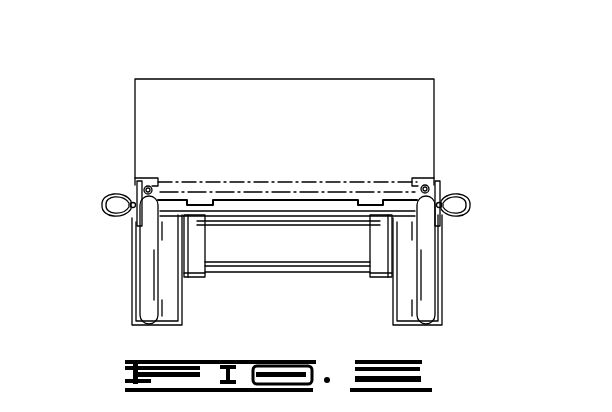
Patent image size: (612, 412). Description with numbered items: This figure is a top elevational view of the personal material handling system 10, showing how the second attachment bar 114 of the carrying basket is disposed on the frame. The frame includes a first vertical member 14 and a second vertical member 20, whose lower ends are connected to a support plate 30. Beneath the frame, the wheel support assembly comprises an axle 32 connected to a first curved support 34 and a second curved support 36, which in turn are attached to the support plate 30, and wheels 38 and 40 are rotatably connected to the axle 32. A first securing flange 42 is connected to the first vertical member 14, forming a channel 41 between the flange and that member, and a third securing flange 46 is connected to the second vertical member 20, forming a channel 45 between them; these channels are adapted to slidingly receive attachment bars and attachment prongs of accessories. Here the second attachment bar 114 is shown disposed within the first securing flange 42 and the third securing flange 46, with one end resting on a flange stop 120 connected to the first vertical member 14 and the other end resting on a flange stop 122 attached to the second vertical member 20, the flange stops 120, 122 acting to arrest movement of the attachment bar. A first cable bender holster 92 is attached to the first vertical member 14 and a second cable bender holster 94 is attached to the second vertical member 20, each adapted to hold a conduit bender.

The handling system 10 is at (174, 52).
The first vertical member 14 is at (429, 270).
The second vertical member 20 is at (146, 259).
The support plate 30 is at (410, 78).
The axle 32 is at (318, 268).
The first curved support 34 is at (382, 277).
The second curved support 36 is at (195, 278).
The wheel 38 is at (438, 324).
The wheel 40 is at (133, 303).
The channel 41 is at (412, 186).
The first securing flange 42 is at (440, 186).
The channel 45 is at (158, 188).
The third securing flange 46 is at (137, 195).
The first cable bender holster 92 is at (469, 208).
The second cable bender holster 94 is at (101, 207).
The second attachment bar 114 is at (210, 182).
The flange stop 120 is at (432, 176).
The flange stop 122 is at (142, 178).